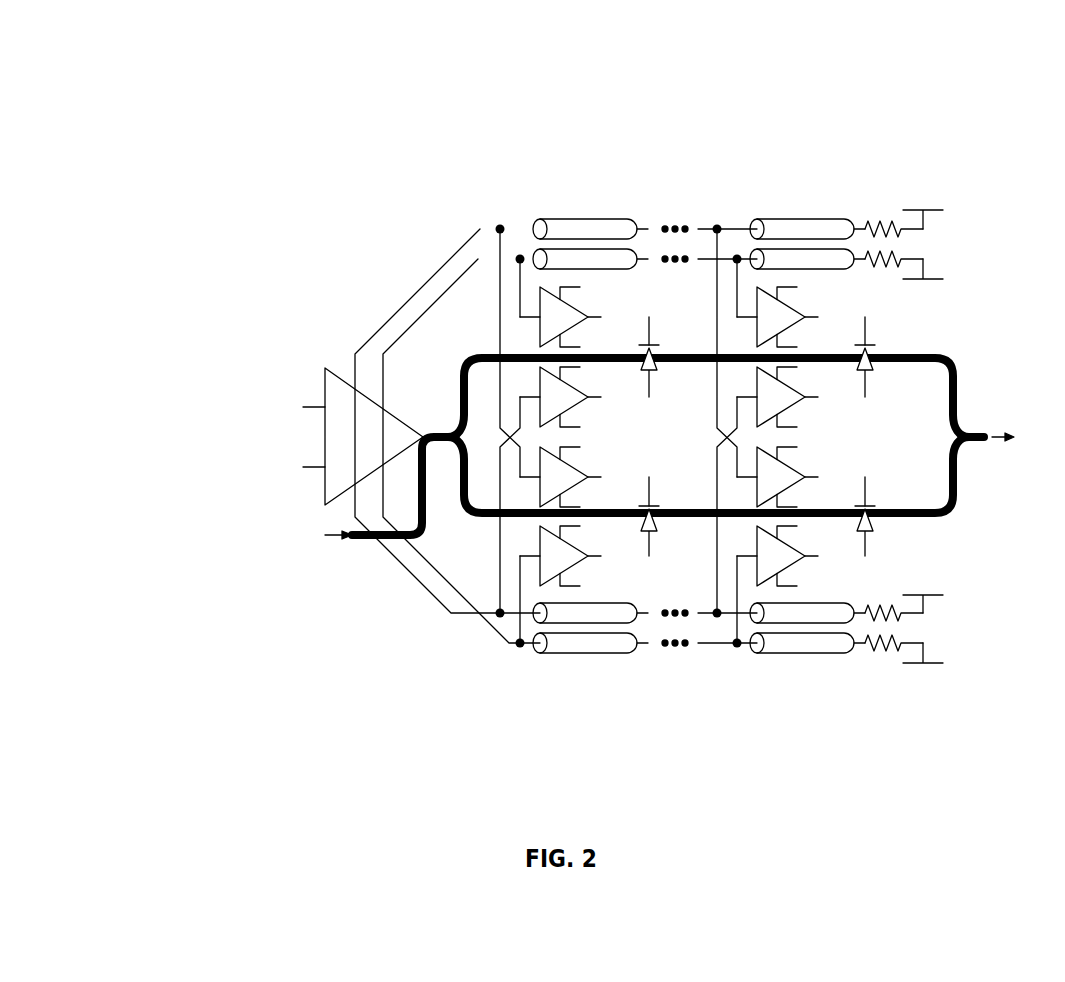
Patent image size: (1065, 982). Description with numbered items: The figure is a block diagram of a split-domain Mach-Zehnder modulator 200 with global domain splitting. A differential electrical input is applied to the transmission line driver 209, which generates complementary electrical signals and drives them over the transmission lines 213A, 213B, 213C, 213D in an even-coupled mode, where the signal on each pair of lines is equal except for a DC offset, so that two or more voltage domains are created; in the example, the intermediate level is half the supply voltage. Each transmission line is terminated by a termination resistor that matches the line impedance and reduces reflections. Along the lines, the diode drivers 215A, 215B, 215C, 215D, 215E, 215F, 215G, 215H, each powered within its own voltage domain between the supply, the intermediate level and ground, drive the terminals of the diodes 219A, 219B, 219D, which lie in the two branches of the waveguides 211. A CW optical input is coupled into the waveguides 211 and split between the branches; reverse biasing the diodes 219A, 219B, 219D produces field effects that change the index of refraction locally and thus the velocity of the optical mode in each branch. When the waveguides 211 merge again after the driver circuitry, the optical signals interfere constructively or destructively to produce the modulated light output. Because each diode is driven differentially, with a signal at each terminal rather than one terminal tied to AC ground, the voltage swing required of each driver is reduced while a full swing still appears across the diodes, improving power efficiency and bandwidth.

The split-domain Mach-Zehnder modulator 200 is at (187, 105).
The transmission line driver 209 is at (343, 471).
The waveguides 211 is at (437, 430).
The transmission line 213A is at (564, 219).
The transmission line 213B is at (640, 247).
The transmission line 213C is at (638, 624).
The transmission line 213D is at (565, 655).
The diode driver 215A is at (575, 325).
The diode driver 215B is at (575, 405).
The diode driver 215C is at (575, 485).
The diode driver 215D is at (575, 564).
The diode driver 215E is at (792, 325).
The diode driver 215F is at (792, 405).
The diode driver 215G is at (792, 485).
The diode driver 215H is at (792, 564).
The diode 219A is at (659, 372).
The diode 219B is at (659, 532).
The diode 219D is at (872, 532).